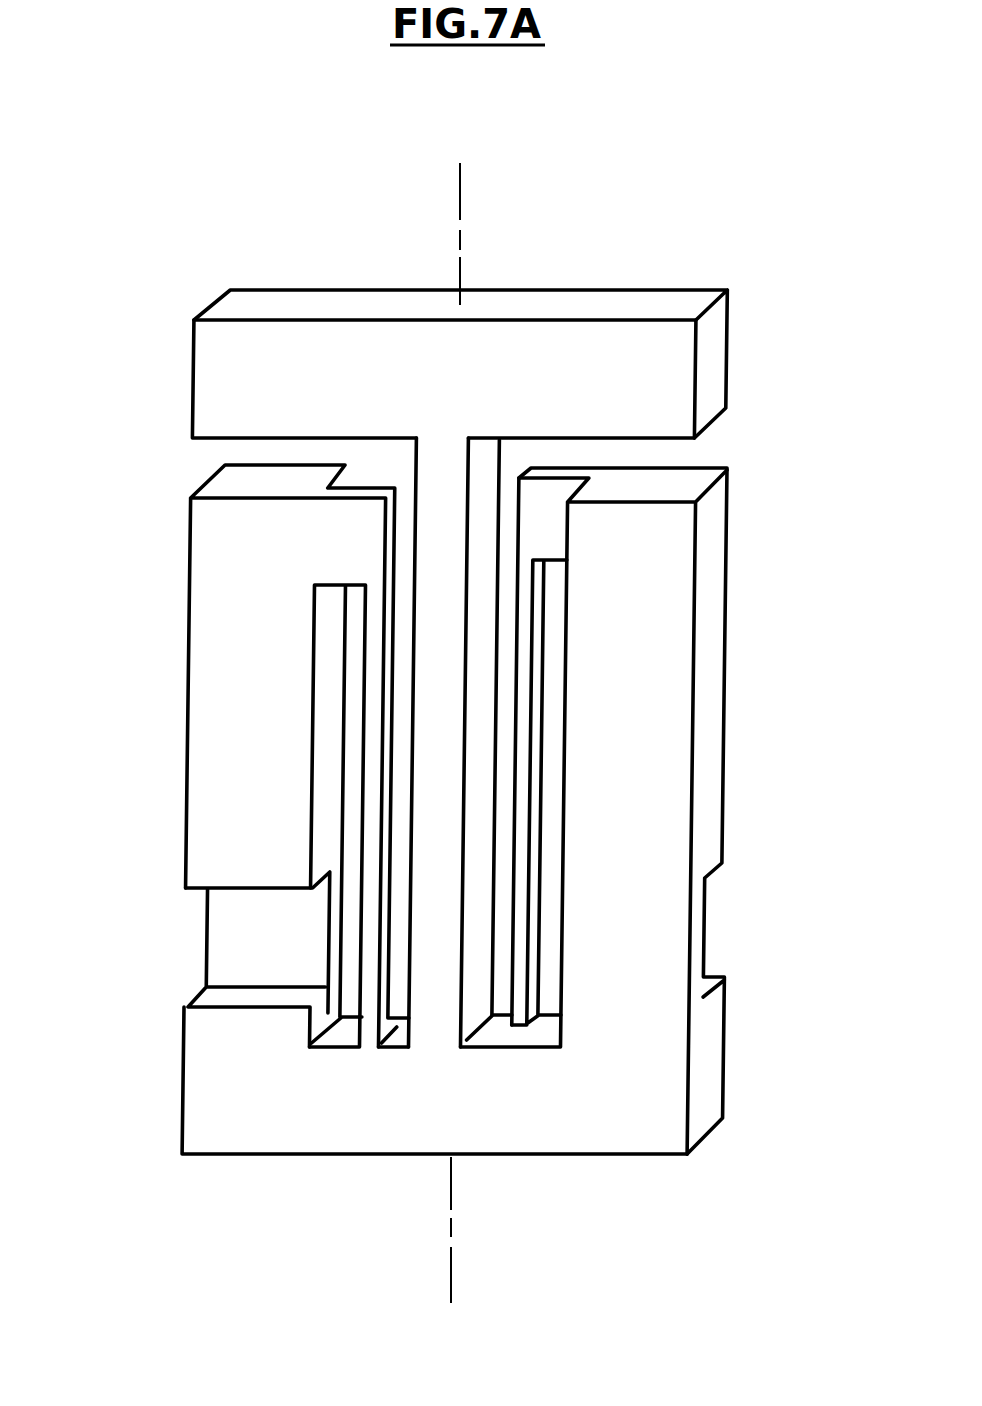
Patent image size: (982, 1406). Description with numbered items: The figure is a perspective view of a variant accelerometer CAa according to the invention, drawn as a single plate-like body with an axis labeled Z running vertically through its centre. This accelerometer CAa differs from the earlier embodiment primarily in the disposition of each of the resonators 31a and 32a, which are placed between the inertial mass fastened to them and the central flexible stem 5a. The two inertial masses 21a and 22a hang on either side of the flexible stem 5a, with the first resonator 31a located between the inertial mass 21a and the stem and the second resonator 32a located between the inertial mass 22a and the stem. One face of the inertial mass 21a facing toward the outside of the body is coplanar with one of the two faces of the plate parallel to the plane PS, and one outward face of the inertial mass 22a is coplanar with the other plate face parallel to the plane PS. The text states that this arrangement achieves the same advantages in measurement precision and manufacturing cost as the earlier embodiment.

The accelerometer CAa is at (323, 218).
The plane PS is at (395, 307).
The flexible stem 5a is at (450, 482).
The inertial mass 21a is at (248, 635).
The inertial mass 22a is at (711, 602).
The resonator 31a is at (372, 808).
The resonator 32a is at (535, 793).
The Z-Z' axis Z is at (475, 725).